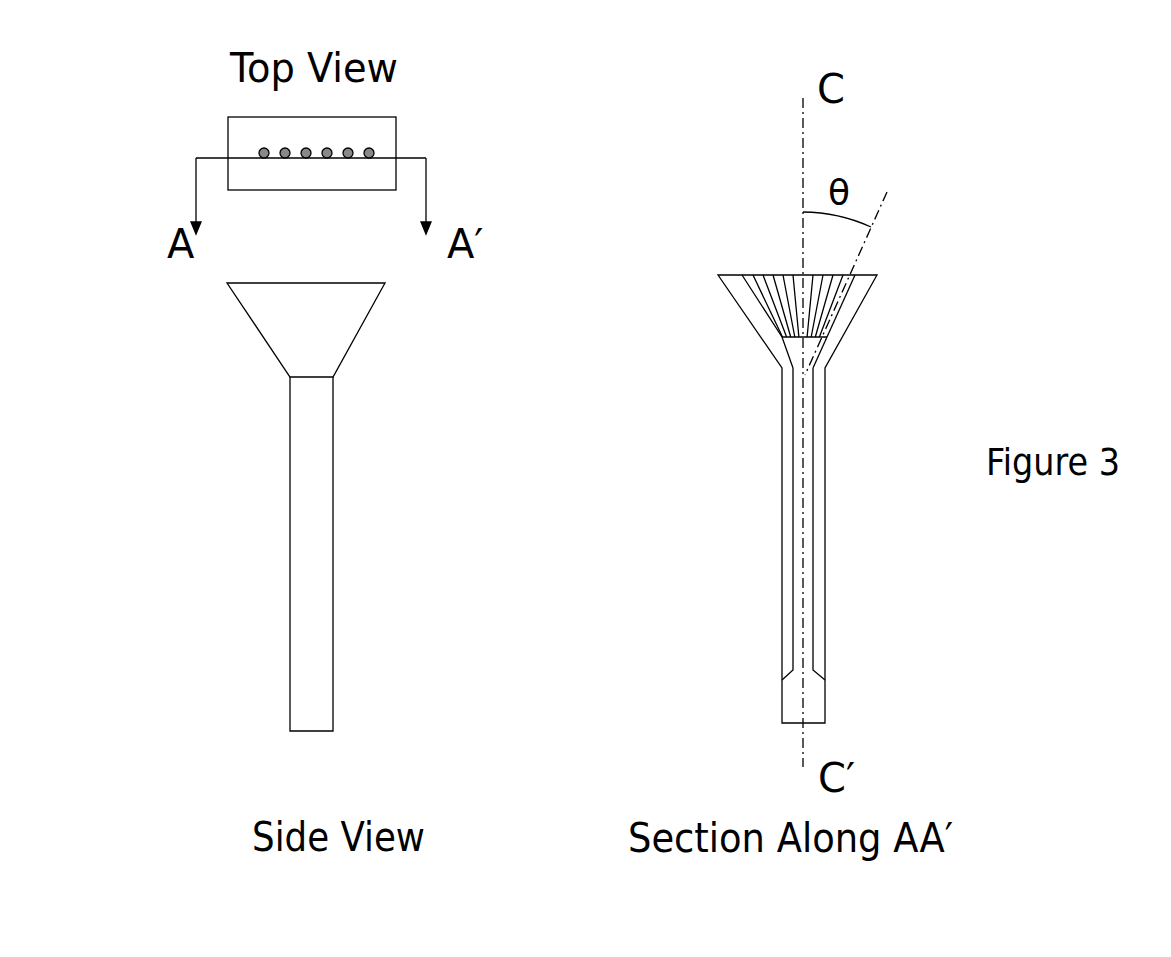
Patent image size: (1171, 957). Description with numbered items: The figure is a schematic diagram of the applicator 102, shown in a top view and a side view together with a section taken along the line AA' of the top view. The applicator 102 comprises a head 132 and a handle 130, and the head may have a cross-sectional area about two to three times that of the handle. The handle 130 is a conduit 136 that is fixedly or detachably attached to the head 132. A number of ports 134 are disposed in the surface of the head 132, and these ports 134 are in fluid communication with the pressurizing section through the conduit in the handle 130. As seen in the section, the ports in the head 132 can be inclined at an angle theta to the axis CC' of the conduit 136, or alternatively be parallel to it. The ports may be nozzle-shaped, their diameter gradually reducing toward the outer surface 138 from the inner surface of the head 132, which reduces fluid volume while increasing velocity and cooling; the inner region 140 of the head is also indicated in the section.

The applicator 102 is at (362, 507).
The handle 130 is at (333, 628).
The head 132 is at (353, 337).
The ports 134 is at (372, 150).
The conduit 136 is at (804, 560).
The outer surface 138 is at (740, 274).
The collection chamber 140 is at (806, 338).